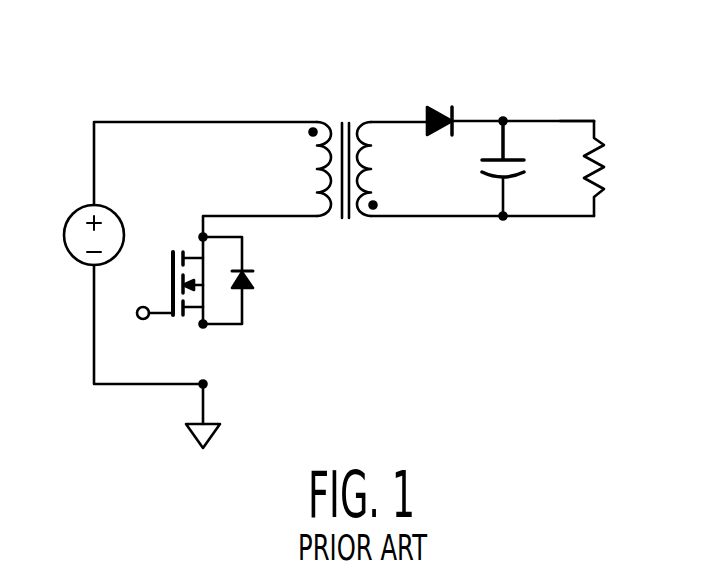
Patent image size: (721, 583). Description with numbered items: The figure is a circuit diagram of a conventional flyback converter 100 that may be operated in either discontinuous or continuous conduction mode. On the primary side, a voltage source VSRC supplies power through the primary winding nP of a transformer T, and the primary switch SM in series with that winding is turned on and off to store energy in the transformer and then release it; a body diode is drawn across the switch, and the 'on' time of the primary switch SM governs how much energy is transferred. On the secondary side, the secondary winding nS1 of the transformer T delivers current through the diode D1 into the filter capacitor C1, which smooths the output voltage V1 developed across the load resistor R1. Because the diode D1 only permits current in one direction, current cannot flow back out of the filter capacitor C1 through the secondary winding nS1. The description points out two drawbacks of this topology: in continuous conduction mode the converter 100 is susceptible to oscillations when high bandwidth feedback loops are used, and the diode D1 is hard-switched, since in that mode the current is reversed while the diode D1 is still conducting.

The flyback converter 100 is at (517, 50).
The source voltage VSRC is at (72, 255).
The primary winding nP is at (305, 169).
The transformer T is at (342, 155).
The secondary winding nS1 is at (387, 169).
The diode D1 is at (435, 97).
The filter capacitor C1 is at (488, 168).
The load resistor R1 is at (611, 168).
The output voltage V1 is at (586, 99).
The primary switch SM is at (186, 295).